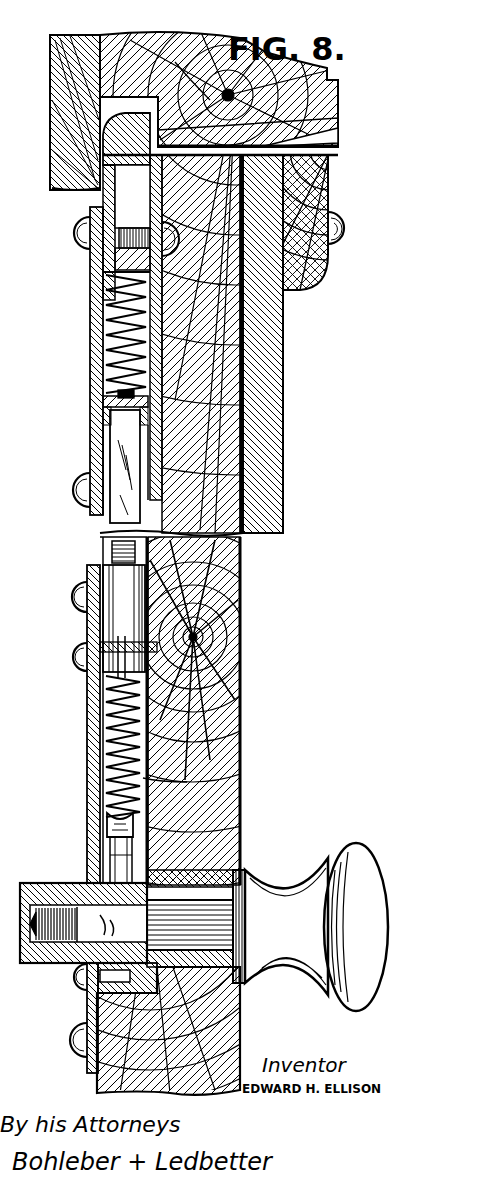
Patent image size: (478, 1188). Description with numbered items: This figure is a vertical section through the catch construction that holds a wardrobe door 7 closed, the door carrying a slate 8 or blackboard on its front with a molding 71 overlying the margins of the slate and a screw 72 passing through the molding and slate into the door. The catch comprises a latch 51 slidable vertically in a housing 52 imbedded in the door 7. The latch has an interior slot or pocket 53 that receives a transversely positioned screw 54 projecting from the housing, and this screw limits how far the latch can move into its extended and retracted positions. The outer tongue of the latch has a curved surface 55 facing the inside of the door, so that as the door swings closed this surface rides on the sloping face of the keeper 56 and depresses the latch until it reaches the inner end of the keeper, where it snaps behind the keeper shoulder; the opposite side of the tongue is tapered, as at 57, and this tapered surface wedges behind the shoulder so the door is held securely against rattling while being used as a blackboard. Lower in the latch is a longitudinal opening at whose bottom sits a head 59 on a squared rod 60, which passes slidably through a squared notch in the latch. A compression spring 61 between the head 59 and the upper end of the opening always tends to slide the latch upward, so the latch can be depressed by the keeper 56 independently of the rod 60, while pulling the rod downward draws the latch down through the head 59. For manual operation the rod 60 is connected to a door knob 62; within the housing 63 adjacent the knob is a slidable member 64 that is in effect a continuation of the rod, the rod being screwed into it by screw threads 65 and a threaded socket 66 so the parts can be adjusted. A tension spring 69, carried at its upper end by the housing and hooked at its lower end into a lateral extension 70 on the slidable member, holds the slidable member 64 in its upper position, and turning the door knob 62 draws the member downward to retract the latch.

The door 7 is at (238, 588).
The slate 8 is at (267, 420).
The latch 51 is at (100, 195).
The housing 52 is at (152, 197).
The interior slot or pocket 53 is at (112, 222).
The screw 54 is at (112, 253).
The curved surface 55 is at (108, 120).
The keeper 56 is at (340, 133).
The tapered surface 57 is at (178, 62).
The head 59 is at (106, 398).
The squared rod 60 is at (118, 440).
The compression spring 61 is at (103, 328).
The door knob 62 is at (343, 856).
The housing 63 is at (237, 768).
The slidable member 64 is at (120, 853).
The screw threads 65 is at (110, 543).
The threaded socket 66 is at (115, 617).
The tension spring 69 is at (100, 740).
The lateral extension 70 is at (118, 832).
The molding 71 is at (327, 193).
The screw 72 is at (341, 242).